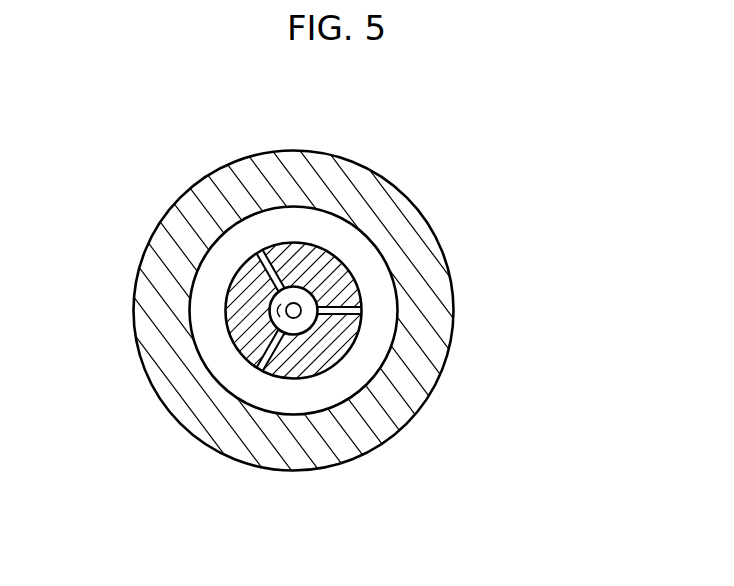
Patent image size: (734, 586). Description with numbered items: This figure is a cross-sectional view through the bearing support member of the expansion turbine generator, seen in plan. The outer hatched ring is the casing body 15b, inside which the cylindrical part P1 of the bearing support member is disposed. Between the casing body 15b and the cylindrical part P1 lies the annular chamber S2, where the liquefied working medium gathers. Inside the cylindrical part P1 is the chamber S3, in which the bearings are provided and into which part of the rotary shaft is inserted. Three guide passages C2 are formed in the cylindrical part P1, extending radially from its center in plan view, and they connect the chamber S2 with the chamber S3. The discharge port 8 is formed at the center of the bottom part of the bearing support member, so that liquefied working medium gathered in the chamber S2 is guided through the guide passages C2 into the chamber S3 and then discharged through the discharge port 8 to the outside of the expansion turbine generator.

The casing body 15b is at (367, 203).
The chamber S2 is at (295, 229).
The cylindrical part P1 is at (330, 343).
The guide passage C2 is at (262, 266).
The chamber S3 is at (275, 313).
The discharge port 8 is at (300, 316).